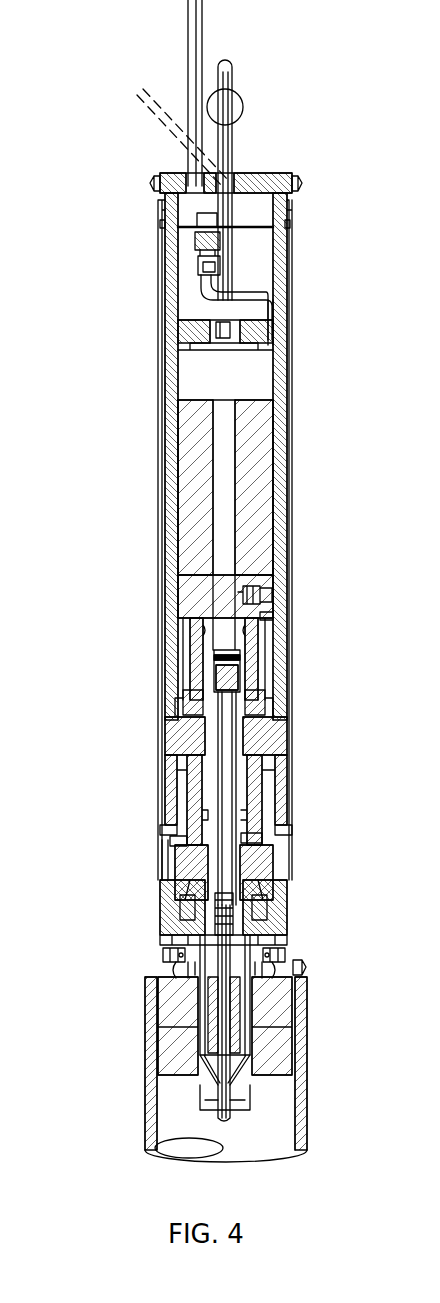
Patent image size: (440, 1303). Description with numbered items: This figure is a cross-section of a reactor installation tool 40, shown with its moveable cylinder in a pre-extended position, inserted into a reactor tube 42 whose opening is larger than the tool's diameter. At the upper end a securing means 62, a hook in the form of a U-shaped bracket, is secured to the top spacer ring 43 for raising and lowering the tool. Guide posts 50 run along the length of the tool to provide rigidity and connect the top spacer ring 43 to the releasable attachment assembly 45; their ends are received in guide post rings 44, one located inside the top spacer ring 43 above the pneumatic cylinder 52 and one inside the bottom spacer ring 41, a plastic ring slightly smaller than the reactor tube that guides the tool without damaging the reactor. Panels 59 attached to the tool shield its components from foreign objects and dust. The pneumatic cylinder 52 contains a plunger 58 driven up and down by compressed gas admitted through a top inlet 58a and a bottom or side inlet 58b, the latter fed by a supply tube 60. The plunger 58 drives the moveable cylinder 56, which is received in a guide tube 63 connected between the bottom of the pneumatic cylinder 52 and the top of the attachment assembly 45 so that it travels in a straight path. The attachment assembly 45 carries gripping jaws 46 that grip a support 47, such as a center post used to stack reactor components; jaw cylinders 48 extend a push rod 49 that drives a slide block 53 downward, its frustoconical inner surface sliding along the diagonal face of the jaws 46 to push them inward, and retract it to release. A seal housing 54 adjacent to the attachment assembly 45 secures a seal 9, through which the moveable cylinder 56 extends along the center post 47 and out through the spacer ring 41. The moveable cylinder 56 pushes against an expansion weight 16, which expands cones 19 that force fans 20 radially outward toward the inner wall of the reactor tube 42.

The reactor installation tool 40 is at (126, 252).
The securing means 62 is at (226, 142).
The guide post rings 44 is at (254, 182).
The top spacer ring 43 is at (296, 184).
The guide posts 50 is at (274, 208).
The panels 59 is at (288, 278).
The top inlet 58a is at (228, 330).
The supply tube 60 is at (284, 340).
The plunger 58 is at (260, 378).
The pneumatic cylinder 52 is at (258, 493).
The bottom or side inlet 58b is at (266, 593).
The guide tube 63 is at (256, 669).
The moveable cylinder 56 is at (218, 745).
The jaw cylinders 48 is at (280, 742).
The push rod 49 is at (180, 787).
The slide block 53 is at (184, 858).
The support 47 is at (230, 898).
The releasable attachment assembly 45 is at (140, 935).
The gripping jaws 46 is at (244, 914).
The seal housing 54 is at (170, 938).
The seal 9 is at (180, 968).
The spacer ring 41 is at (300, 968).
The reactor tube 42 is at (302, 1098).
The fans 20 is at (176, 1053).
The expansion weight 16 is at (246, 1025).
The cones 19 is at (206, 1082).